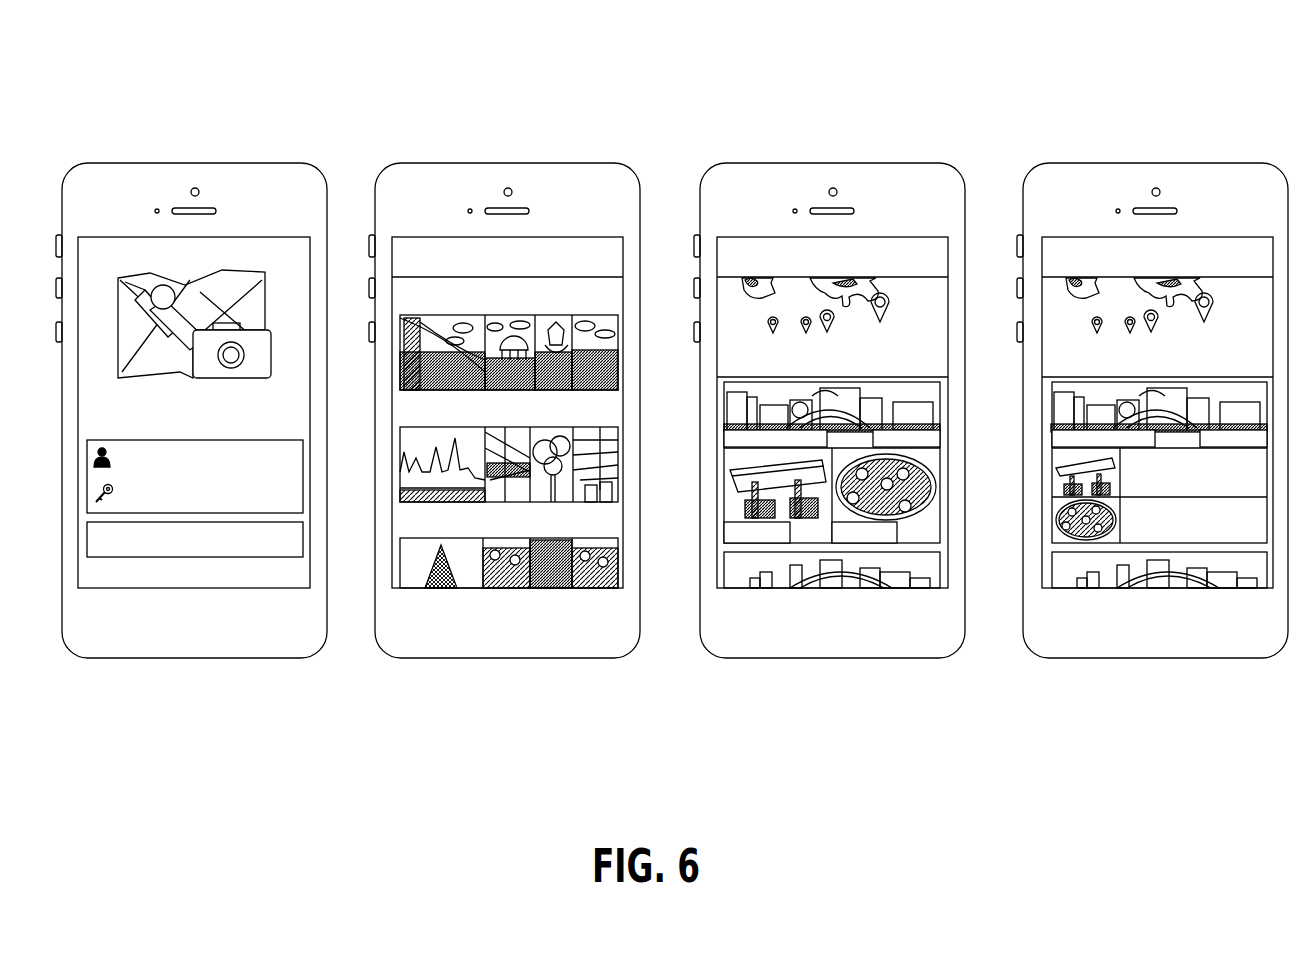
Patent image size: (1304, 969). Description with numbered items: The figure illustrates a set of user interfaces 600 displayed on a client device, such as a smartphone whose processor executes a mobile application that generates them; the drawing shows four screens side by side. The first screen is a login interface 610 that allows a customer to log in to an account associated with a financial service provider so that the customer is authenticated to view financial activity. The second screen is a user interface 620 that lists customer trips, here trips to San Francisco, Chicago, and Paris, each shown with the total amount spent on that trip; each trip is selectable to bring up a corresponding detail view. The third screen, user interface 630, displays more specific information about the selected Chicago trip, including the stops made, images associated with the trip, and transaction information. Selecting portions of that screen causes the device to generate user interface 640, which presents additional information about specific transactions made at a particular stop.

The set of user interfaces 600 is at (438, 35).
The login interface 610 is at (147, 250).
The trip list user interface 620 is at (455, 250).
The trip detail user interface 630 is at (778, 250).
The transaction detail user interface 640 is at (1101, 250).